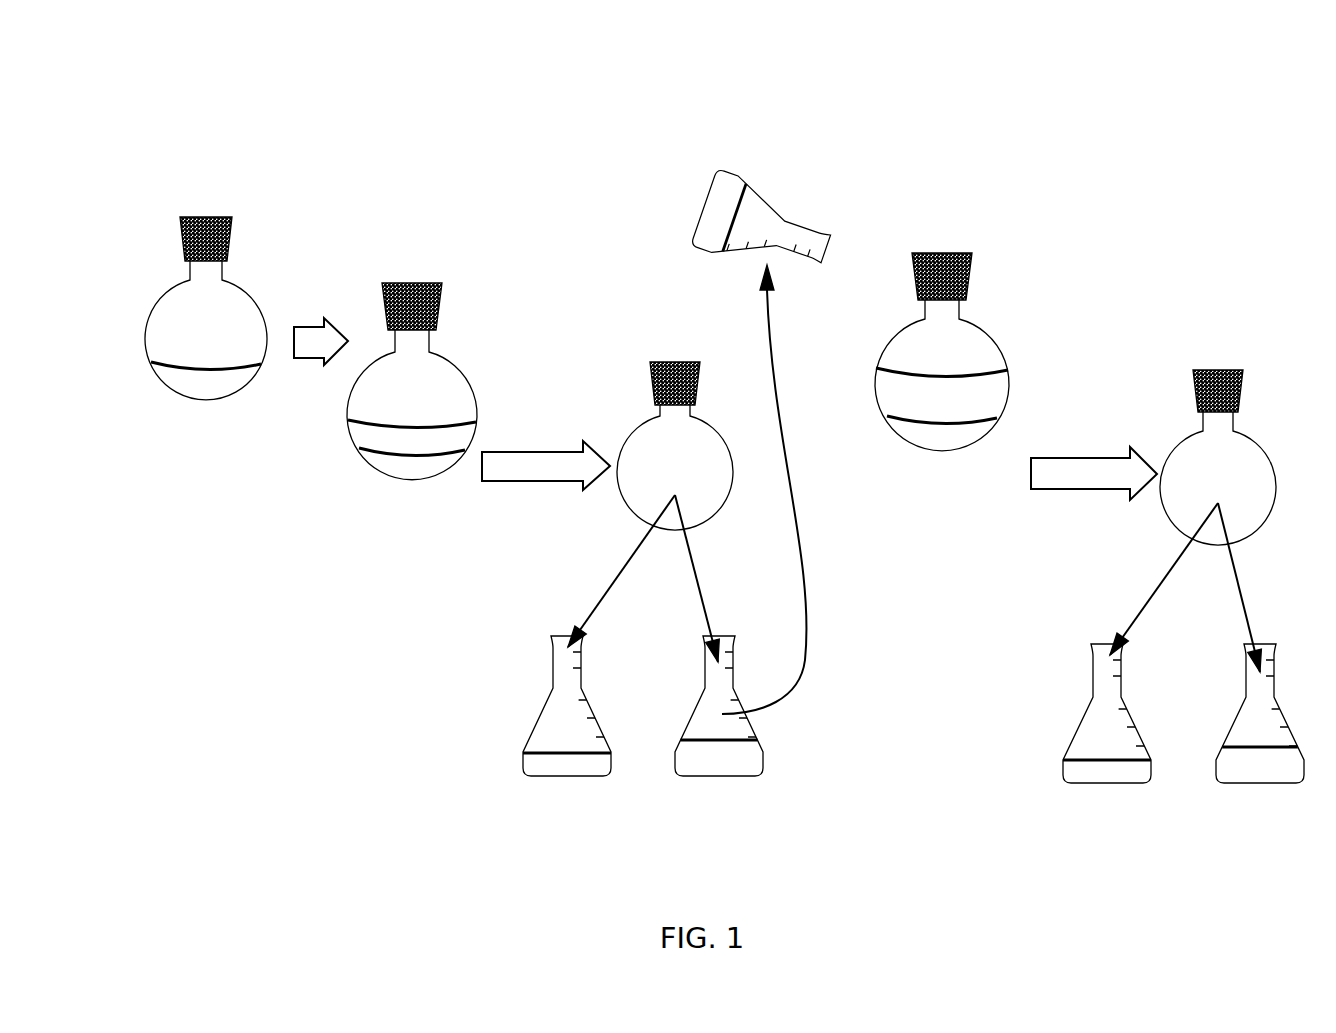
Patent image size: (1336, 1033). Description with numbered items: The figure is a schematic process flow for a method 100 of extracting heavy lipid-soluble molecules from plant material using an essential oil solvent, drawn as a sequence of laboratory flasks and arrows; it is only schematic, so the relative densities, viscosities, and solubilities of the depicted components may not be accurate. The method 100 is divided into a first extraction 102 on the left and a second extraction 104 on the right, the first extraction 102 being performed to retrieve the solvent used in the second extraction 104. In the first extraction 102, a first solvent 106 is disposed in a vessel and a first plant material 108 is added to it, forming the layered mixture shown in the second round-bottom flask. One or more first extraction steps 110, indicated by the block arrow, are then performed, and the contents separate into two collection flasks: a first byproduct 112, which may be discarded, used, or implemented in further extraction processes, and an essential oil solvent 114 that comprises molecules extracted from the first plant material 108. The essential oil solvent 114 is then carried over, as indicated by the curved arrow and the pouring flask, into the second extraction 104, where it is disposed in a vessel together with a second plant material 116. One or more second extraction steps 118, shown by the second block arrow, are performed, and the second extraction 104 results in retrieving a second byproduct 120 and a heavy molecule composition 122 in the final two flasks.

The method 100 is at (287, 64).
The first extraction 102 is at (373, 253).
The second extraction 104 is at (985, 162).
The first solvent 106 is at (210, 384).
The first plant material 108 is at (400, 466).
The first extraction steps 110 is at (546, 465).
The first byproduct 112 is at (555, 762).
The essential oil solvent 114 is at (716, 243).
The second plant material 116 is at (912, 437).
The second extraction steps 118 is at (1094, 473).
The second byproduct 120 is at (1082, 775).
The heavy molecule composition 122 is at (1262, 775).